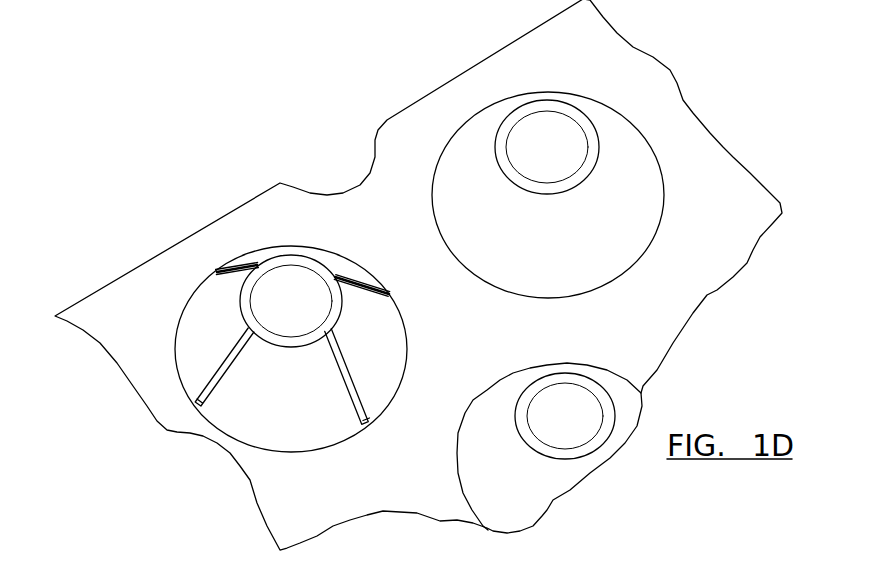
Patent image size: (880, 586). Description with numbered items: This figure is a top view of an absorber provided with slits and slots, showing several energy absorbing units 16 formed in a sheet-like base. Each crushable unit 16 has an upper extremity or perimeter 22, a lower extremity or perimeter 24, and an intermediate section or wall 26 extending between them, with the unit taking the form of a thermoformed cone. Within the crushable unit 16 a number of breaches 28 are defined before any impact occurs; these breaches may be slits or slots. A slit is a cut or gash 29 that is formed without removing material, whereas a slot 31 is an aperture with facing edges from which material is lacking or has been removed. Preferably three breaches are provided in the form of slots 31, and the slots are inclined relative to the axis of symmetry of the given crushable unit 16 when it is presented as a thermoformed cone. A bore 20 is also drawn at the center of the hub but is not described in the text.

The energy absorbing unit 16 is at (260, 349).
The bore 20 is at (282, 277).
The upper extremity or perimeter 22 is at (270, 239).
The lower extremity or perimeter 24 is at (363, 425).
The intermediate section or wall 26 is at (197, 355).
The breach 28 is at (345, 368).
The slit or cut or gash 29 is at (503, 108).
The slot 31 is at (502, 401).